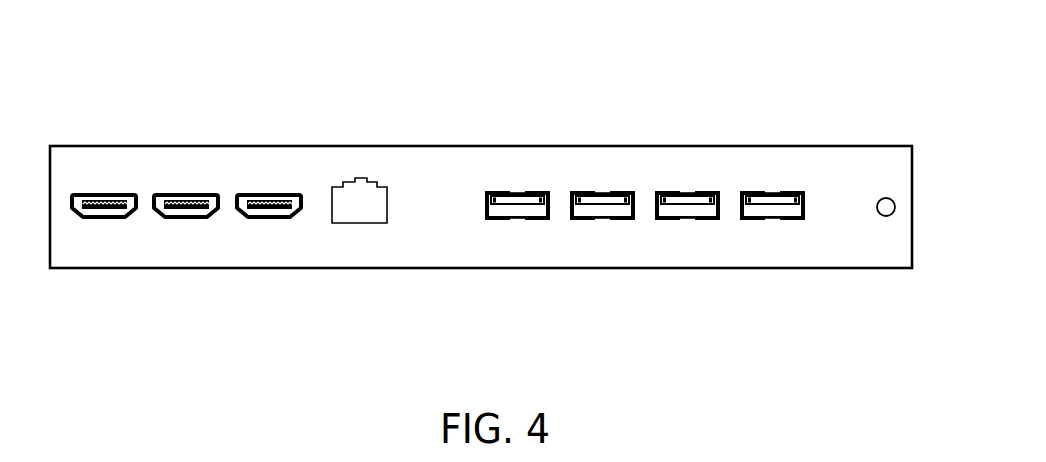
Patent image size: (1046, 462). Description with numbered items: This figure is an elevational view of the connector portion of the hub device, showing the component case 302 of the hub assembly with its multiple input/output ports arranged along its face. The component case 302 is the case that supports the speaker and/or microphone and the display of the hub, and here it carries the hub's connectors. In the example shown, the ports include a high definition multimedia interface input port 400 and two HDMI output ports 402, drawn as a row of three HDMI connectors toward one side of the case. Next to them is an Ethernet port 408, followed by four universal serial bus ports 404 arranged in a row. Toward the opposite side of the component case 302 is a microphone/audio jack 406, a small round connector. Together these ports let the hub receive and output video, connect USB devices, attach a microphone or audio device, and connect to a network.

The component case 302 is at (481, 146).
The HDMI input port 400 is at (104, 193).
The HDMI output ports 402 is at (268, 193).
The USB ports 404 is at (687, 220).
The microphone/audio jack 406 is at (886, 216).
The Ethernet port 408 is at (360, 223).